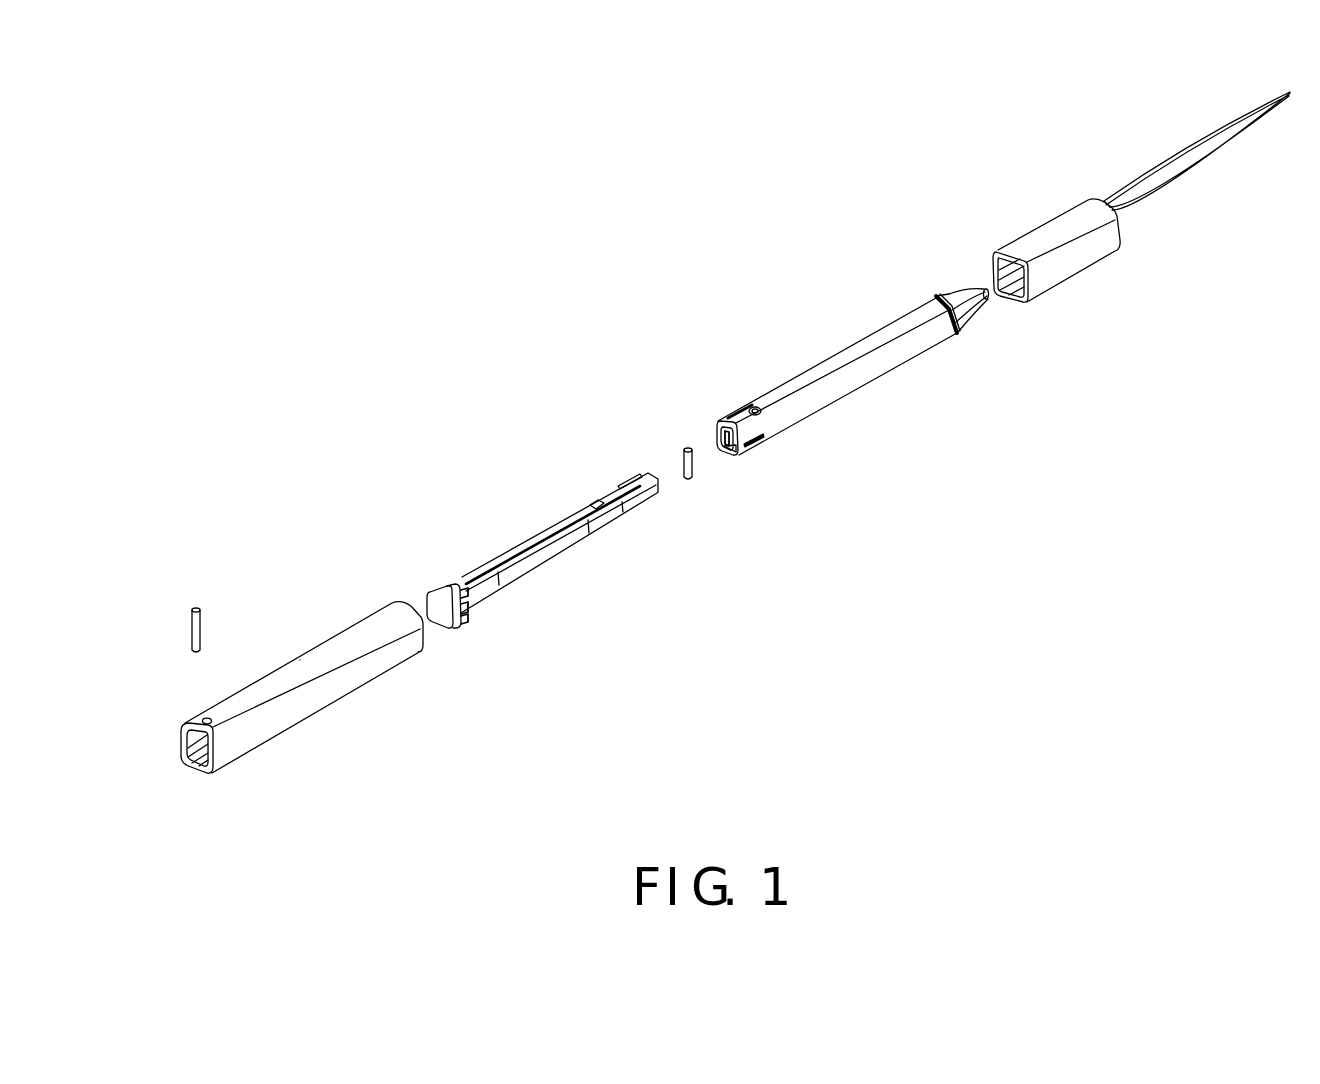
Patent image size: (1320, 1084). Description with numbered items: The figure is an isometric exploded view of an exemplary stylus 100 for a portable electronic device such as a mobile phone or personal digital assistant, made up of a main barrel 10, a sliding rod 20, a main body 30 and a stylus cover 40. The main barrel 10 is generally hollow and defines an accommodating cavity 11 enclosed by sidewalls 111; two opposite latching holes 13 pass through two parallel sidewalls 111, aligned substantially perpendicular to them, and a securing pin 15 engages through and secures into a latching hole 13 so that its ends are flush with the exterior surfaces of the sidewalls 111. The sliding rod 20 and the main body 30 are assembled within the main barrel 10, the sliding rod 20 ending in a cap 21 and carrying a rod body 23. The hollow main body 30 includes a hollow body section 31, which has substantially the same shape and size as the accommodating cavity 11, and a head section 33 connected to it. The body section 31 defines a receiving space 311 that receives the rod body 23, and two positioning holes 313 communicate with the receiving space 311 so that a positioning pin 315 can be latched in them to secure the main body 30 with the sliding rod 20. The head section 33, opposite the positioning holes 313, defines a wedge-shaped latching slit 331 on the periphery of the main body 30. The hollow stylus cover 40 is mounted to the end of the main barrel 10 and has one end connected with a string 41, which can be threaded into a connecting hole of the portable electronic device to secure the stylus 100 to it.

The stylus 100 is at (461, 324).
The main barrel 10 is at (270, 767).
The accommodating cavity 11 is at (181, 753).
The latching holes 13 is at (204, 718).
The securing pin 15 is at (190, 637).
The sidewalls 111 is at (312, 657).
The sliding rod 20 is at (526, 494).
The button cap 21 is at (432, 600).
The rod body 23 is at (515, 568).
The main body 30 is at (834, 331).
The body section 31 is at (848, 385).
The receiving space 311 is at (730, 452).
The positioning holes 313 is at (754, 407).
The positioning pin 315 is at (680, 462).
The head section 33 is at (951, 296).
The latching slit 331 is at (957, 330).
The stylus cover 40 is at (1028, 206).
The string 41 is at (1178, 142).